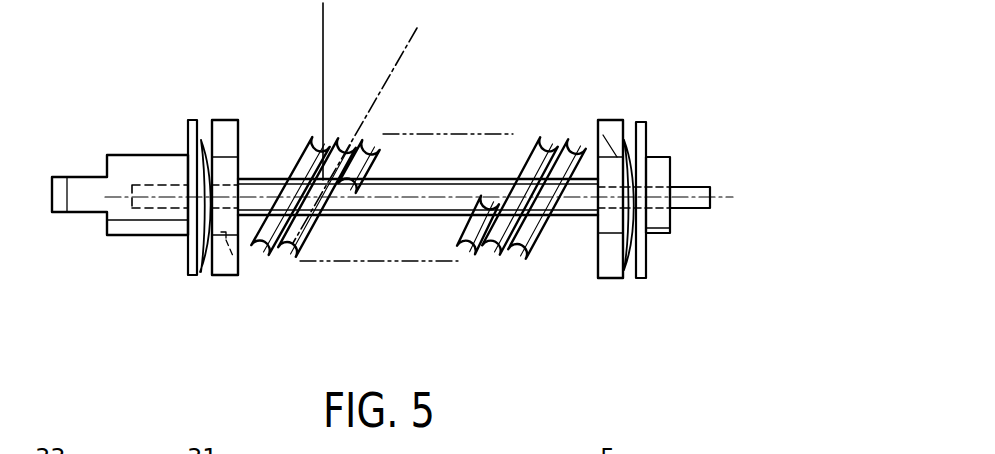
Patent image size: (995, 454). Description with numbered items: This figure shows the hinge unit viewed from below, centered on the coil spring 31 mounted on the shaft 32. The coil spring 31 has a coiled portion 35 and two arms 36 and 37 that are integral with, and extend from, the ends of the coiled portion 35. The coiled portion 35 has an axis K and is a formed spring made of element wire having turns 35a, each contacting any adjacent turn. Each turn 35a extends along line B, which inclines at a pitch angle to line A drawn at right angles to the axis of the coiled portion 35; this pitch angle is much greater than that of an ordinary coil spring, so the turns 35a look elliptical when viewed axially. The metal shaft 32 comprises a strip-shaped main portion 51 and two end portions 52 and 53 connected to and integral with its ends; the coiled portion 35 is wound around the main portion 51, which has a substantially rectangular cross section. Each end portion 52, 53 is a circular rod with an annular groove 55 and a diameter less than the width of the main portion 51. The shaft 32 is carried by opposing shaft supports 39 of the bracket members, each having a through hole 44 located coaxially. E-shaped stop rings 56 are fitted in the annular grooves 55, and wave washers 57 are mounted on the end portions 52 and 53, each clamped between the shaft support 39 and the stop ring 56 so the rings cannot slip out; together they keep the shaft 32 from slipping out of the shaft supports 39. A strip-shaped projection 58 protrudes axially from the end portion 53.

The coil spring 31 is at (490, 248).
The shaft 32 is at (355, 220).
The coiled portion 35 is at (460, 133).
The turns 35a is at (258, 263).
The arm 36 is at (693, 192).
The arm 37 is at (173, 185).
The shaft support 39 is at (228, 121).
The through hole 44 is at (247, 267).
The main portion 51 is at (397, 207).
The end portion 52 is at (122, 225).
The end portion 53 is at (670, 158).
The annular groove 55 is at (190, 172).
The E-shaped stop ring 56 is at (183, 253).
The wave washer 57 is at (200, 274).
The strip-shaped projection 58 is at (82, 182).
The axis K is at (443, 262).
The line A is at (323, 48).
The line B is at (400, 62).